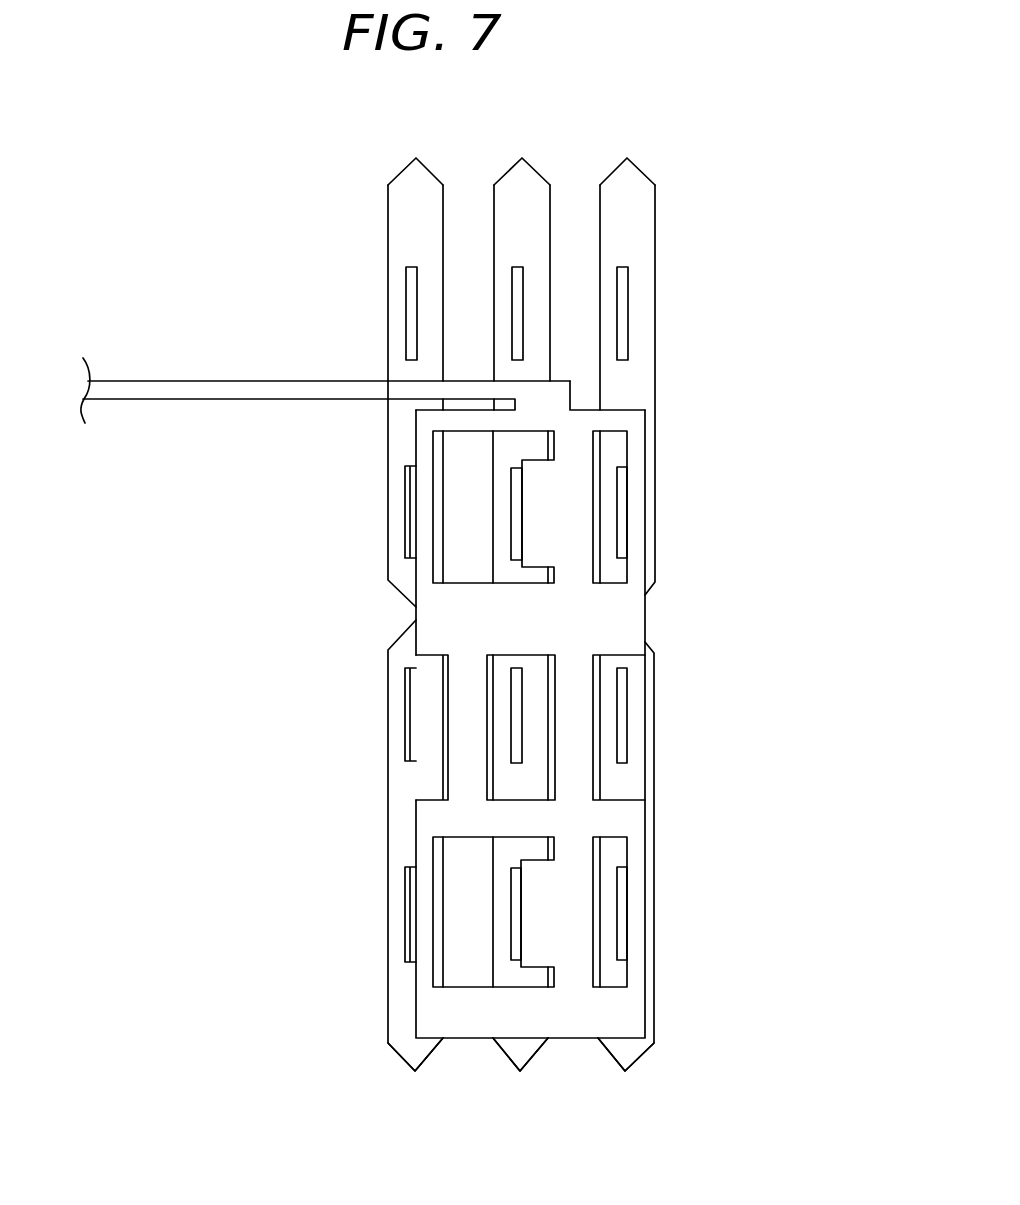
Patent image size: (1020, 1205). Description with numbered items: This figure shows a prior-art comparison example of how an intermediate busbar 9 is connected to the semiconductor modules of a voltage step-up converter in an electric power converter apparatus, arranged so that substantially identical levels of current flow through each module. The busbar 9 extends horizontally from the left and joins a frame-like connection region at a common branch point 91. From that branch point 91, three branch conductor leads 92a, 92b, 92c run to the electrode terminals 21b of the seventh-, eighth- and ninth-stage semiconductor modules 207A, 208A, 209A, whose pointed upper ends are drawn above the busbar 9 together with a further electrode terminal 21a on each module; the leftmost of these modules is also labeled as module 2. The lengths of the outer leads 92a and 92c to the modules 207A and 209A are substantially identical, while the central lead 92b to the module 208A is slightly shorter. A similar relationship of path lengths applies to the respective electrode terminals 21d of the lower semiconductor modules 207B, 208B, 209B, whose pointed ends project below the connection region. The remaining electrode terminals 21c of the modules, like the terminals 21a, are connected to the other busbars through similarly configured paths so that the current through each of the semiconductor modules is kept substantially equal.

The connector terminal 2 is at (400, 208).
The busbar 9 is at (182, 380).
The common branch point 91 is at (538, 402).
The branch conductor lead 92a is at (422, 513).
The branch conductor lead 92b is at (550, 487).
The branch conductor lead 92c is at (638, 527).
The electrode terminal 21a is at (625, 290).
The electrode terminal 21b is at (518, 533).
The electrode terminal 21c is at (412, 717).
The electrode terminal 21d is at (410, 900).
The semiconductor module 207A is at (424, 182).
The semiconductor module 208A is at (534, 182).
The semiconductor module 209A is at (638, 182).
The semiconductor module 207B is at (405, 1045).
The semiconductor module 208B is at (513, 1052).
The semiconductor module 209B is at (617, 1057).